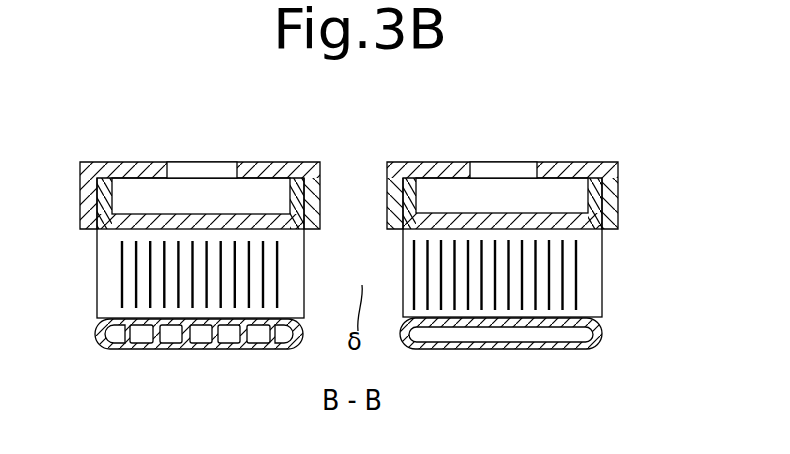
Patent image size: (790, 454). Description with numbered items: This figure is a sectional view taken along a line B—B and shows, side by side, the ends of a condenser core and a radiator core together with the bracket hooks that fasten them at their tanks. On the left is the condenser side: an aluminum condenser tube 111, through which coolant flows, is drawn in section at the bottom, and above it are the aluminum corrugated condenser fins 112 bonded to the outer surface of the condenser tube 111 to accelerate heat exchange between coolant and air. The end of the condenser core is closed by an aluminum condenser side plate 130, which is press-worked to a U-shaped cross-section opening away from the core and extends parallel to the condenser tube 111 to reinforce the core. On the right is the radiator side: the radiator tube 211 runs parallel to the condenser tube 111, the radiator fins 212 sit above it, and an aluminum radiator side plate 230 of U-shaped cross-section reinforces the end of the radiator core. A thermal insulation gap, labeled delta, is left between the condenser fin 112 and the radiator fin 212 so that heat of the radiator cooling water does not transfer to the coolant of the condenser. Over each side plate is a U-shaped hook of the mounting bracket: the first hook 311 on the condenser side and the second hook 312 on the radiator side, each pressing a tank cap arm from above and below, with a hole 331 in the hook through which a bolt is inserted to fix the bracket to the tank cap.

The condenser tube 111 is at (213, 350).
The condenser fin 112 is at (296, 258).
The condenser side plate 130 is at (198, 213).
The radiator tube 211 is at (510, 349).
The radiator fin 212 is at (588, 280).
The radiator side plate 230 is at (571, 213).
The first U-shaped hook 311 is at (292, 162).
The second U-shaped hook 312 is at (445, 162).
The hole 331 is at (225, 162).